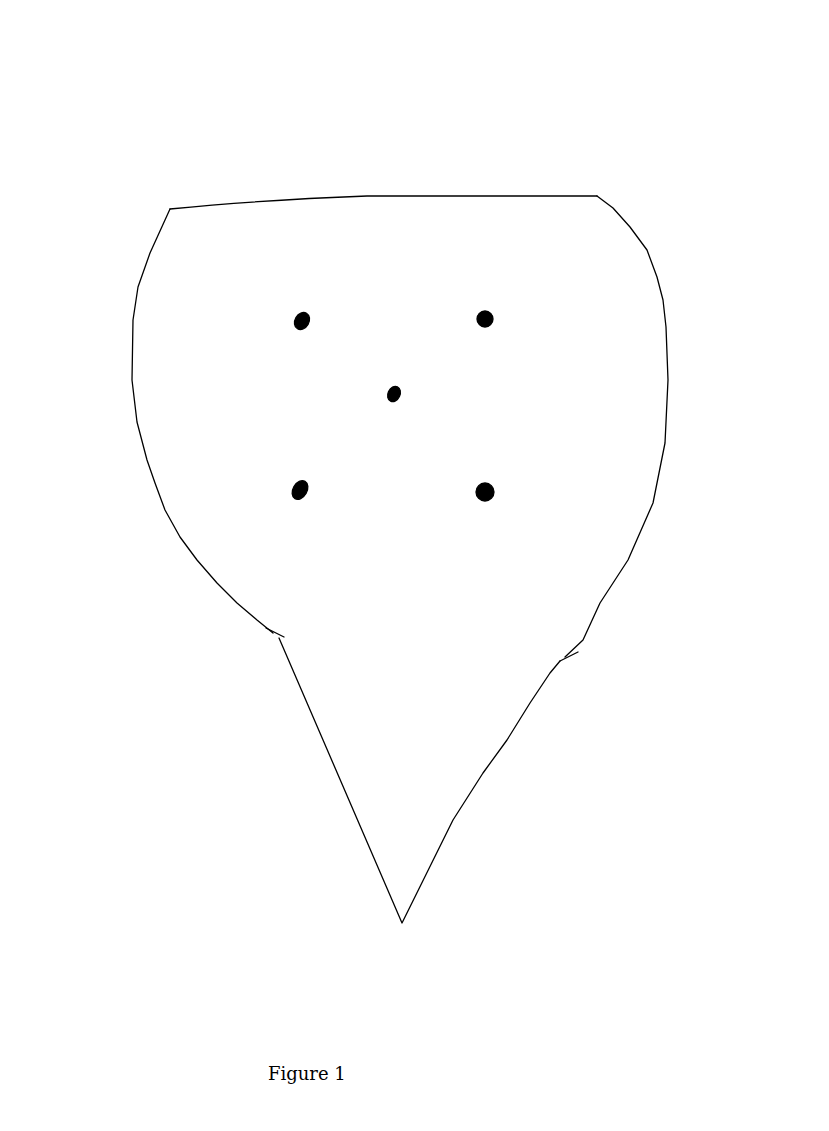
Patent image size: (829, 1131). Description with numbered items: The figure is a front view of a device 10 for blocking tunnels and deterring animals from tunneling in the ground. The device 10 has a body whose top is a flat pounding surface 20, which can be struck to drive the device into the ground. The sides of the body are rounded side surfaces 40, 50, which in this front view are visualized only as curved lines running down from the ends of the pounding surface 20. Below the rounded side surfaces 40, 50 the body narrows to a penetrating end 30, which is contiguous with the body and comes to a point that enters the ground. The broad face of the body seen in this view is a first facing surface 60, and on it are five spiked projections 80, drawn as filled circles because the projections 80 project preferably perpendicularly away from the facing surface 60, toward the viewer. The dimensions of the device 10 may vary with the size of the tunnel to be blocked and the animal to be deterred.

The device 10 is at (684, 63).
The flat pounding surface 20 is at (375, 190).
The penetrating end 30 is at (402, 930).
The rounded side surface 40 is at (135, 421).
The rounded side surface 50 is at (672, 393).
The first facing surface 60 is at (616, 448).
The spiked projections 80 is at (497, 492).